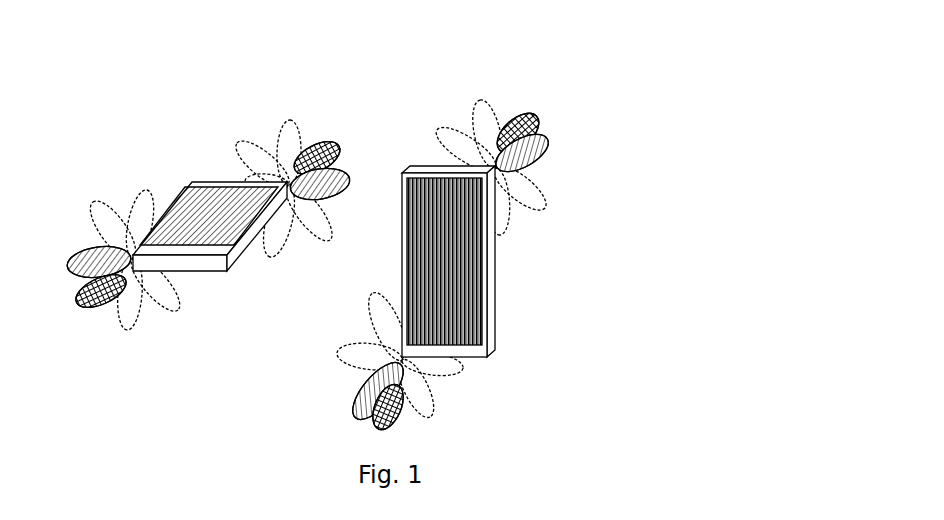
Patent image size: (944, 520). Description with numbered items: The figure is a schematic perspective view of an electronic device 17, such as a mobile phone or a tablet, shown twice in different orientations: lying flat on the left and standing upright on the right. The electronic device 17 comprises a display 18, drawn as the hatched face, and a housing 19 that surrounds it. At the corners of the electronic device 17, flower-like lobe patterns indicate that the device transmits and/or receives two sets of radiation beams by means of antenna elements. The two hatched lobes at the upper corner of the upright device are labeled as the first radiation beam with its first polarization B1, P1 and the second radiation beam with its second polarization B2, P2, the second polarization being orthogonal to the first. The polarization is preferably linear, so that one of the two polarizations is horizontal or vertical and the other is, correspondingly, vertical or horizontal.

The electronic device 17 is at (415, 143).
The display 18 is at (455, 285).
The housing 19 is at (487, 330).
The first beam / first polarization lobe B1, P1 is at (530, 117).
The second beam / second polarization lobe B2, P2 is at (547, 148).